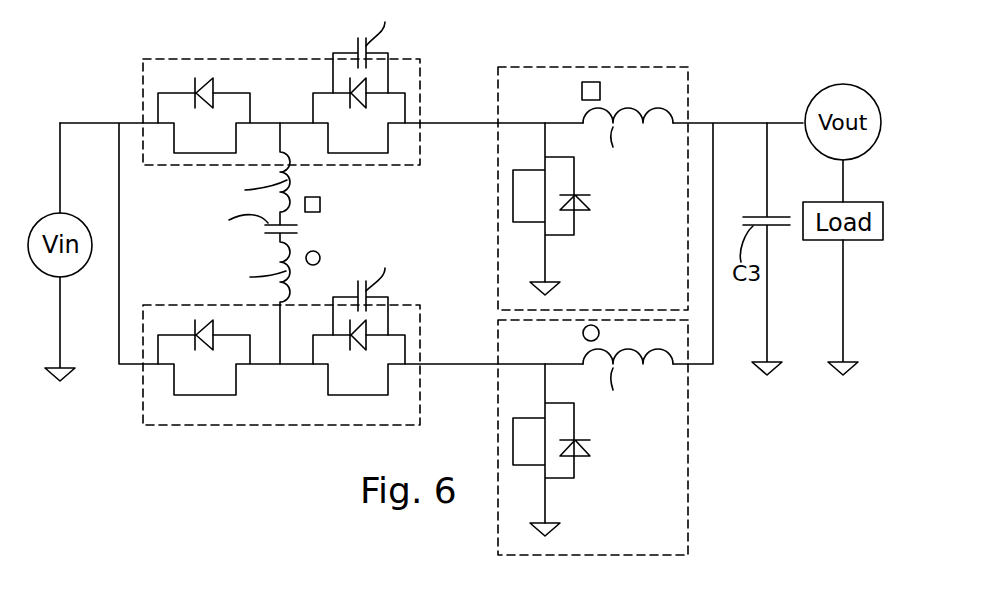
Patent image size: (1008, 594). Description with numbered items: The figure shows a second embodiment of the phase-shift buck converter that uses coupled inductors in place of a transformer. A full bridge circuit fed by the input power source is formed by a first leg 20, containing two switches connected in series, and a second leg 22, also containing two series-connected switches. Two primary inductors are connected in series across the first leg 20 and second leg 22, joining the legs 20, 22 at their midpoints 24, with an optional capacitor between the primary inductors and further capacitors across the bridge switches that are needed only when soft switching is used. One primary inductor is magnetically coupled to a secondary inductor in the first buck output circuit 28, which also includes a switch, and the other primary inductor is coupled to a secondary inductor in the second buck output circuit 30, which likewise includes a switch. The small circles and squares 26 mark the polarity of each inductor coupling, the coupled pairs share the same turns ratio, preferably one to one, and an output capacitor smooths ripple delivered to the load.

The first leg 20 is at (220, 59).
The second leg 22 is at (285, 425).
The midpoints 24 is at (280, 123).
The small circles and squares 26 is at (320, 205).
The first buck output circuit 28 is at (553, 67).
The second buck output circuit 30 is at (690, 437).